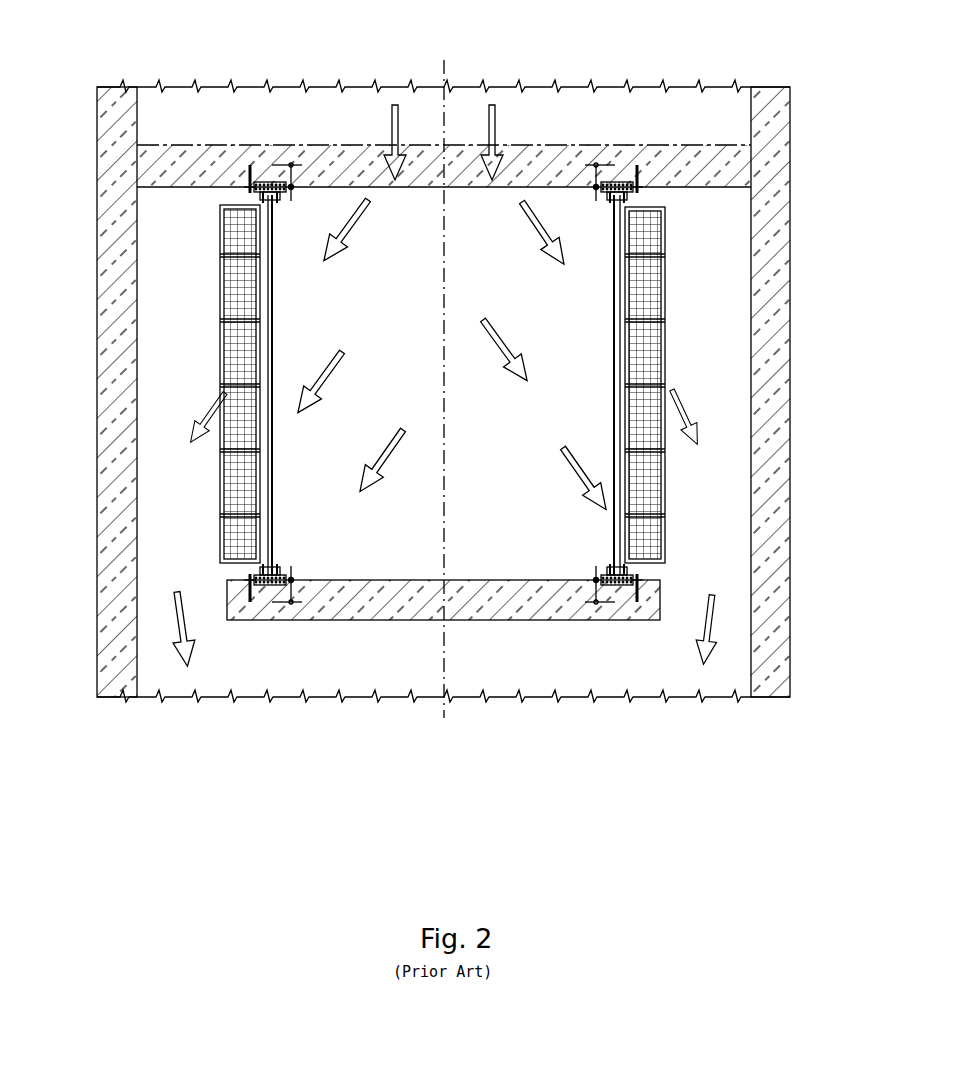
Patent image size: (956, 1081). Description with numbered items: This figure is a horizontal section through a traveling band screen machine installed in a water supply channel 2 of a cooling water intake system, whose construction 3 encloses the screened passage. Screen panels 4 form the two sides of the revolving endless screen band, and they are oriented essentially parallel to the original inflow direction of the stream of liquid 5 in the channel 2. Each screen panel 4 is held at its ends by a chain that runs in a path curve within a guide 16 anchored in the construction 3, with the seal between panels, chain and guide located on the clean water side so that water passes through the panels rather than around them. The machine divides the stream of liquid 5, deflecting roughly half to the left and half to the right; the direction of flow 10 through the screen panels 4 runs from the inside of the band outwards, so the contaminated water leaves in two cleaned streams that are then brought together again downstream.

The water supply channel 2 is at (718, 550).
The construction 3 is at (115, 477).
The screen panels 4 is at (645, 294).
The stream of liquid 5 is at (424, 250).
The direction of flow 10 is at (495, 128).
The guide 16 is at (262, 187).